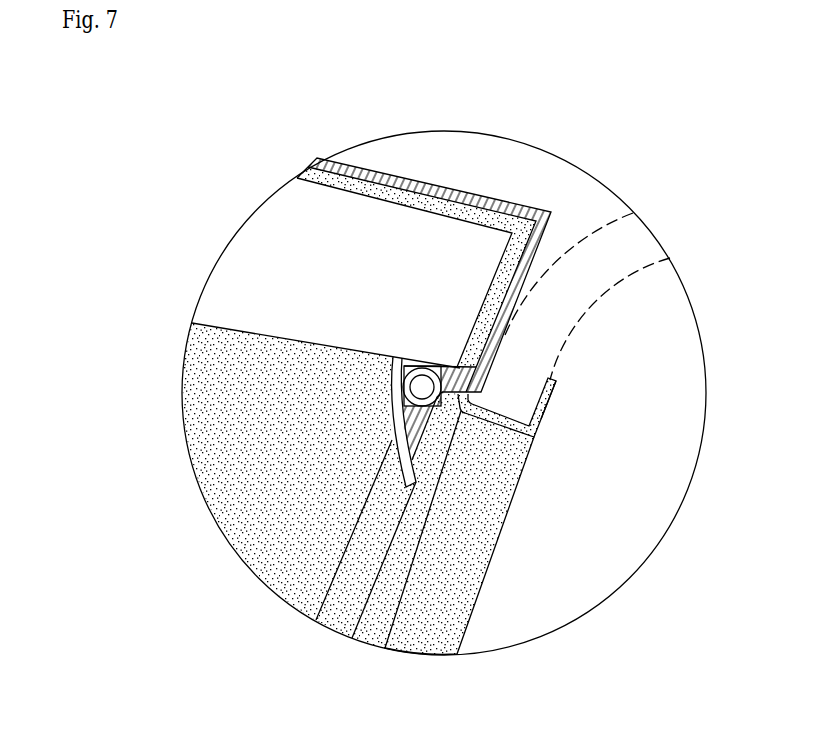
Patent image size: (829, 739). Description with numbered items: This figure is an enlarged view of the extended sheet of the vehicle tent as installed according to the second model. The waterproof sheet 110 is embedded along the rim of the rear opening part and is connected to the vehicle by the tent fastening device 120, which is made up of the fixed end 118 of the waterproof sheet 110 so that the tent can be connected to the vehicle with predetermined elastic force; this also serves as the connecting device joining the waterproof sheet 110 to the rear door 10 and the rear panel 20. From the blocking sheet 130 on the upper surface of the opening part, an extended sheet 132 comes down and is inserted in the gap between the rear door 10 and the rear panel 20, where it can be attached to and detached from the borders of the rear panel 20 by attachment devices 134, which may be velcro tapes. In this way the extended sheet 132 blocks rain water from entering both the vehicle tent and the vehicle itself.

The rear door 10 is at (210, 322).
The rear panel 20 is at (610, 220).
The waterproof sheet 110 is at (318, 159).
The fixed end 118 is at (437, 366).
The tent fastening device 120 is at (422, 370).
The blocking sheet 130 is at (300, 177).
The extended sheet 132 is at (552, 398).
The attachment devices 134 is at (544, 417).